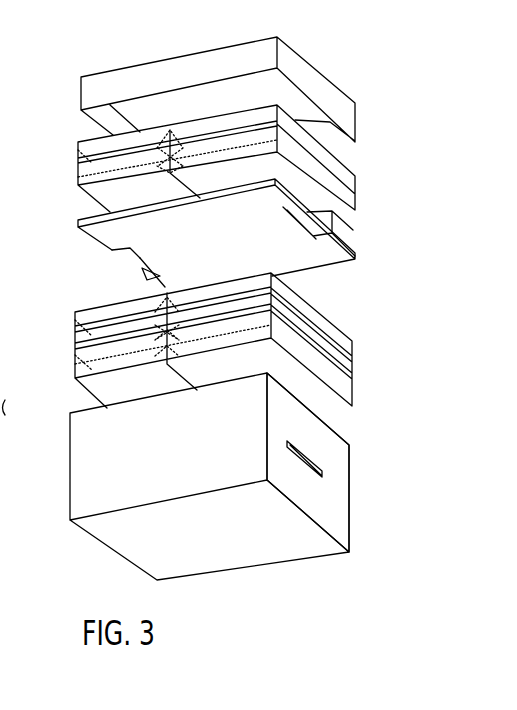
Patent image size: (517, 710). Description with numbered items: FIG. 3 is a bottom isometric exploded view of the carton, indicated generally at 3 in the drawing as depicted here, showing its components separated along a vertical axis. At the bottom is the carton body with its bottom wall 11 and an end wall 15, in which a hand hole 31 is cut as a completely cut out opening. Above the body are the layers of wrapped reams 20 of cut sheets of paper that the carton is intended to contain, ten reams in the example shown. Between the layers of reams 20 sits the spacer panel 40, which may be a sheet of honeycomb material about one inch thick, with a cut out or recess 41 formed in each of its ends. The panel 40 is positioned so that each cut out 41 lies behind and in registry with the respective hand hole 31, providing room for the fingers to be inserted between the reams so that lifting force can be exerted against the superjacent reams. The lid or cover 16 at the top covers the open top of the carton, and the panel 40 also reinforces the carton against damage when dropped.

The stacked assembly 3 is at (80, 500).
The bottom wall 11 is at (236, 484).
The end wall 15 is at (338, 512).
The lid or cover 16 is at (316, 72).
The wrapped reams of cut sheets of paper 20 is at (356, 196).
The hand hole 31 is at (313, 463).
The spacer panel 40 is at (234, 236).
The cut out or recess 41 is at (332, 220).